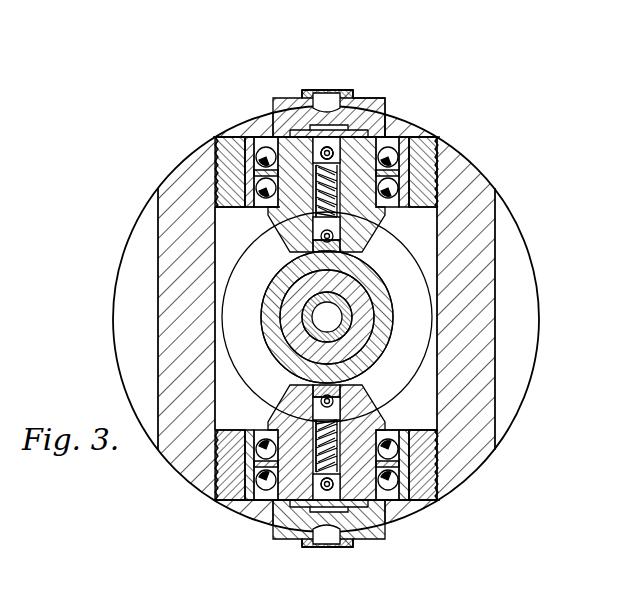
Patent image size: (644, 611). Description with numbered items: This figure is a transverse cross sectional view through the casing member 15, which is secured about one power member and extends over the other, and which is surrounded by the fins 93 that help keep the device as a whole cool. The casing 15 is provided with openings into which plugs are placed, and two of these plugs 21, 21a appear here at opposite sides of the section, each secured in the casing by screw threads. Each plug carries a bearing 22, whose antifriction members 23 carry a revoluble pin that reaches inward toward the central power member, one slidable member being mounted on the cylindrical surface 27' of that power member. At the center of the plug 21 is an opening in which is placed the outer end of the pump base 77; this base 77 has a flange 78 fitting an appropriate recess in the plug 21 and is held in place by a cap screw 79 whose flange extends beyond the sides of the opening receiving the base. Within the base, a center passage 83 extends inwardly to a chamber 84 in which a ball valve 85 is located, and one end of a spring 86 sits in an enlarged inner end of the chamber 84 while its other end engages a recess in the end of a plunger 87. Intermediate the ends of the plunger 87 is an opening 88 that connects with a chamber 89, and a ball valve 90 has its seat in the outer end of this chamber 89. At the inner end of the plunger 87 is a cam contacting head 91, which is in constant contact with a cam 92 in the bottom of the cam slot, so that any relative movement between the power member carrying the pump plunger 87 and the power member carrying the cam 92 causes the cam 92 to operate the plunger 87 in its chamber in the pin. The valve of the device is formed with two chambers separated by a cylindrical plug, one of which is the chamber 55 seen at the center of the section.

The casing member 15 is at (178, 172).
The plug 21 is at (233, 130).
The plug 21a is at (413, 512).
The bearing 22 is at (212, 137).
The antifriction member 23 is at (433, 140).
The cylindrical surface 27' is at (342, 317).
The chamber 55 is at (327, 317).
The pump base 77 is at (366, 99).
The flange 78 is at (389, 117).
The cap screw 79 is at (322, 89).
The center passage 83 is at (341, 153).
The chamber 84 is at (313, 153).
The ball valve 85 is at (313, 180).
The spring 86 is at (341, 190).
The plunger 87 is at (305, 237).
The opening 88 is at (341, 413).
The chamber 89 is at (364, 243).
The ball valve 90 is at (310, 257).
The cam contacting head 91 is at (266, 289).
The cam 92 is at (373, 278).
The fins 93 is at (114, 312).